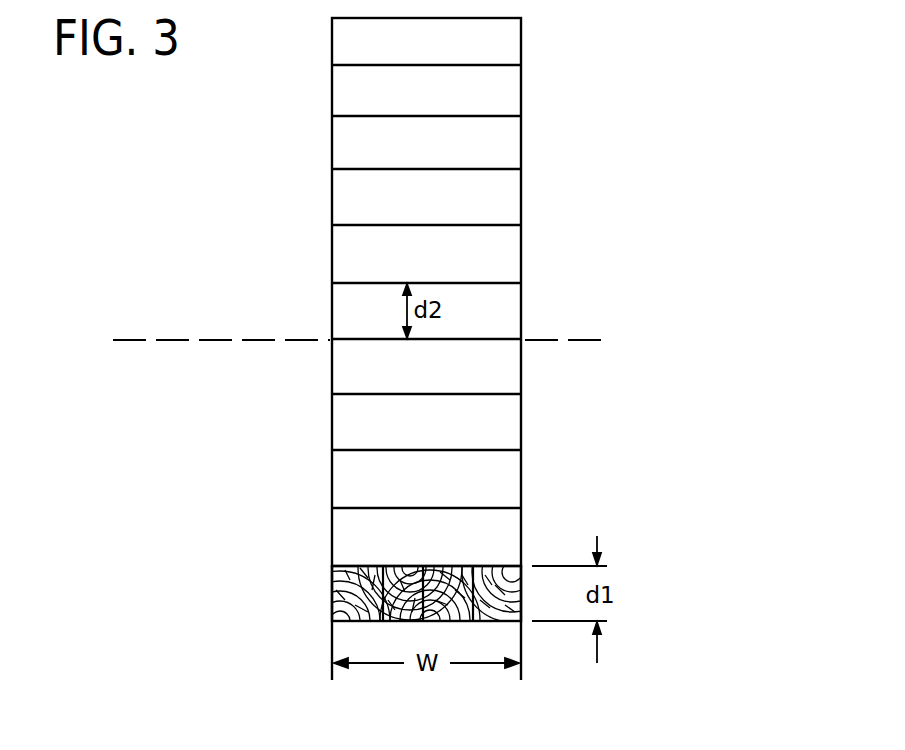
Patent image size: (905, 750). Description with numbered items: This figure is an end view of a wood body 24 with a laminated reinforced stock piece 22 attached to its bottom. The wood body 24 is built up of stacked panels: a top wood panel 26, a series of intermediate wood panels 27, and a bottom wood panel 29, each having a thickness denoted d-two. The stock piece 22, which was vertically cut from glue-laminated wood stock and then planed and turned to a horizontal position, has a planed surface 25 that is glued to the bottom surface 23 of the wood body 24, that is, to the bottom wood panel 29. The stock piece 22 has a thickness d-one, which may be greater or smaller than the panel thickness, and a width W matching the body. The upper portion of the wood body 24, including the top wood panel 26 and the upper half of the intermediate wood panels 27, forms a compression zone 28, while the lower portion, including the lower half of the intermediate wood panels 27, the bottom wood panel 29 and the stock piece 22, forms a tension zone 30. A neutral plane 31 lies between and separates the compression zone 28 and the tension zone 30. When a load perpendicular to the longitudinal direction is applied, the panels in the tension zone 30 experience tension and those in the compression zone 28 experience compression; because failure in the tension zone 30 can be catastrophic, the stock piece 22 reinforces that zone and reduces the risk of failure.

The laminated reinforced stock piece 22 is at (402, 534).
The bottom surface 23 is at (482, 557).
The wood body 24 is at (515, 349).
The planed surface 25 is at (400, 562).
The top wood panel 26 is at (482, 55).
The intermediate wood panels 27 is at (537, 508).
The compression zone 28 is at (323, 340).
The bottom wood panel 29 is at (517, 537).
The tension zone 30 is at (330, 621).
The neutral plane 31 is at (177, 340).